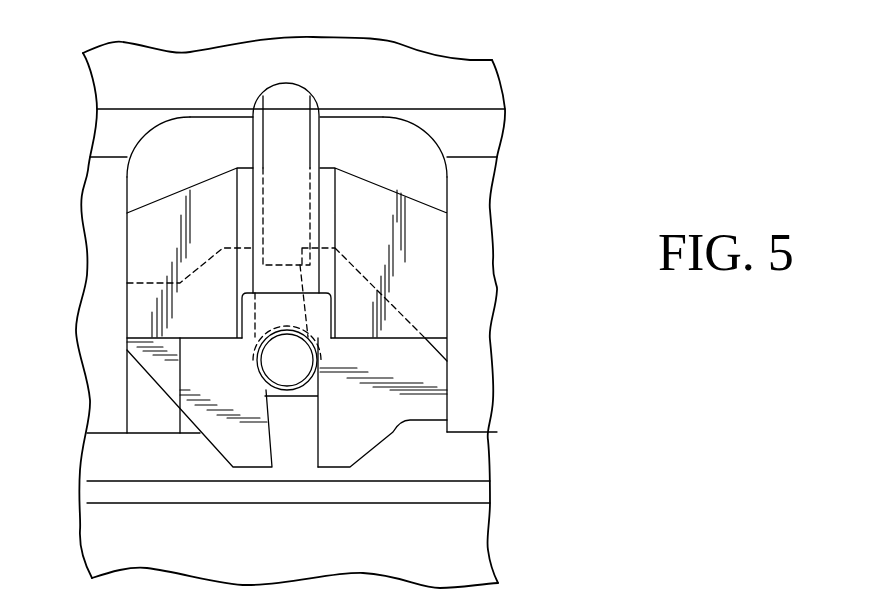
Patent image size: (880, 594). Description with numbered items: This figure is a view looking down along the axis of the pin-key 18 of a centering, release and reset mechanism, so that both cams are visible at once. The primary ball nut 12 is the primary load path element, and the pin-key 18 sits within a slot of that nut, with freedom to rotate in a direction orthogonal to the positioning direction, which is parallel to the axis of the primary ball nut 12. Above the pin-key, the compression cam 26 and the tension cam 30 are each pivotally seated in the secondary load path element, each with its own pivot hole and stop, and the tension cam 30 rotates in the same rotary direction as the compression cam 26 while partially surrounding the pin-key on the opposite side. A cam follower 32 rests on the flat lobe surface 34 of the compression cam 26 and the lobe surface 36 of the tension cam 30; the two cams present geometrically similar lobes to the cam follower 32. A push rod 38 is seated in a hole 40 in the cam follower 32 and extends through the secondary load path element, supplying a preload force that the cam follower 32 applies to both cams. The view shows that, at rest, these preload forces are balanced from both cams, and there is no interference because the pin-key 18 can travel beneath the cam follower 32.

The primary ball nut 12 is at (463, 523).
The pin-key 18 is at (288, 372).
The compression cam 26 is at (427, 373).
The tension cam 30 is at (210, 400).
The cam follower 32 is at (143, 238).
The lobe surface 34 is at (127, 338).
The lobe surface 36 is at (312, 338).
The push rod 38 is at (288, 132).
The hole 40 is at (310, 232).